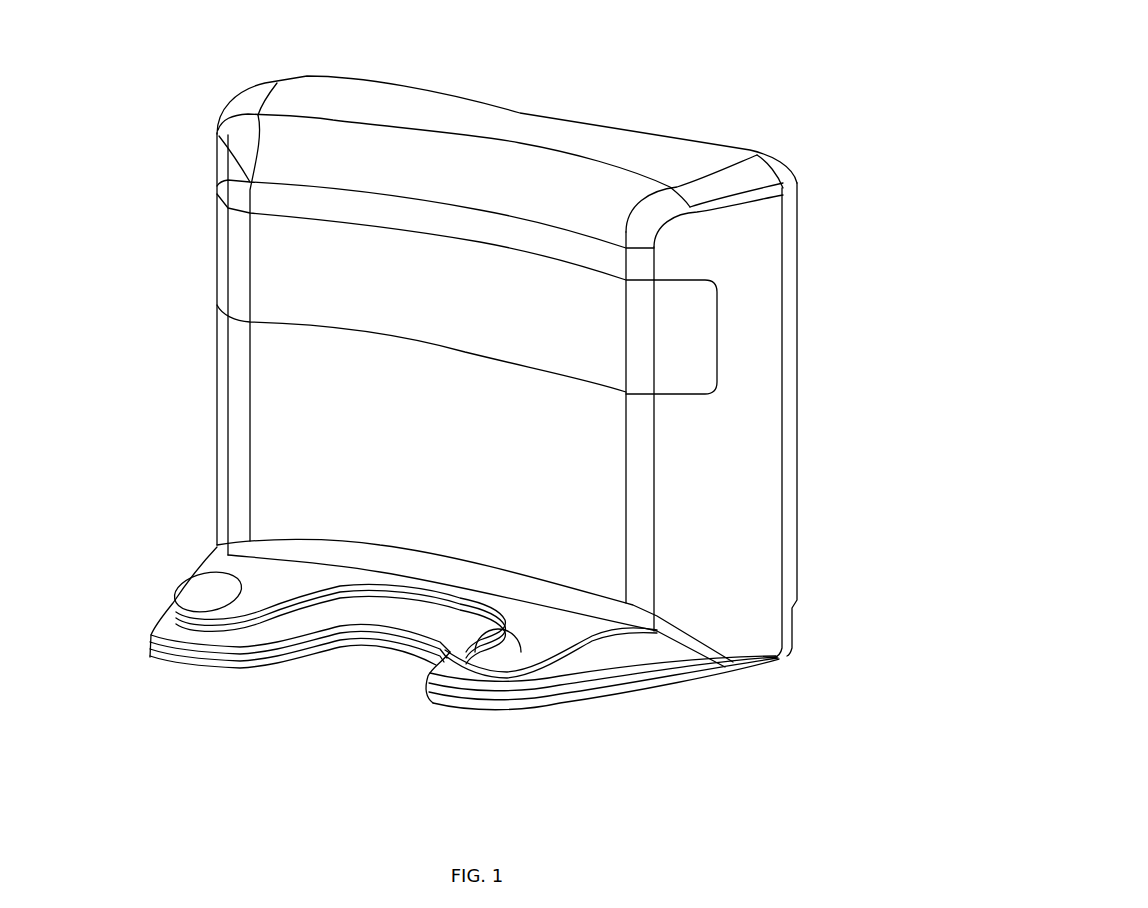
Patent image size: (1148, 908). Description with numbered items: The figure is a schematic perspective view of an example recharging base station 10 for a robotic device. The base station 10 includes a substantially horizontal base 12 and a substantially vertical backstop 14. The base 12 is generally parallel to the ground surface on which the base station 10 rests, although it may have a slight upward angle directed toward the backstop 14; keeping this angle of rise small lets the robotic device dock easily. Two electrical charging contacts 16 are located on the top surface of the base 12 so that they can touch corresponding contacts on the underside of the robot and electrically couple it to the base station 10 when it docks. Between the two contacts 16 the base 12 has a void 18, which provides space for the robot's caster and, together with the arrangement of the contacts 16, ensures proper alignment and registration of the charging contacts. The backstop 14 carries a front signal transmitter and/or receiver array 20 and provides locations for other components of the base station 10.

The recharging base station 10 is at (770, 85).
The base 12 is at (630, 687).
The backstop 14 is at (797, 375).
The electrical charging contacts 16 is at (202, 600).
The void 18 is at (332, 680).
The front signal transmitter and/or receiver array 20 is at (263, 250).